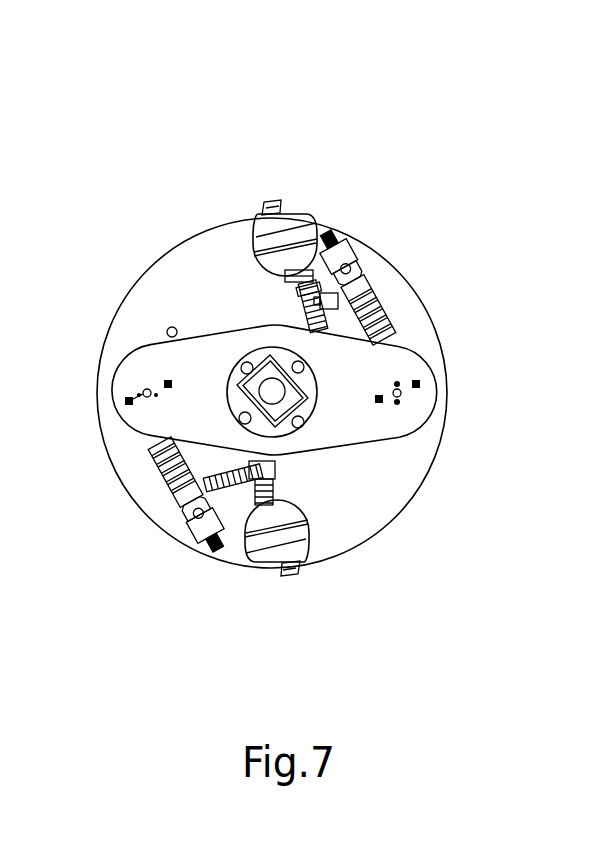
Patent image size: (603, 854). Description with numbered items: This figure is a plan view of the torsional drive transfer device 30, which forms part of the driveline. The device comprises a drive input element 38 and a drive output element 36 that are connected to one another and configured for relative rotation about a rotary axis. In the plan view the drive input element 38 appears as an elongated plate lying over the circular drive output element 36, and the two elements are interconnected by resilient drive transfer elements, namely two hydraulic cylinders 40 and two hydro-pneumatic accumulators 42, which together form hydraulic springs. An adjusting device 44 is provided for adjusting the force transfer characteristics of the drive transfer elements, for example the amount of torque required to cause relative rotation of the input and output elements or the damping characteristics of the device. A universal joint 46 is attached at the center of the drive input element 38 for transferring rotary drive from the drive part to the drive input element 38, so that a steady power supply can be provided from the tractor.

The torsional drive transfer device 30 is at (391, 180).
The drive output element 36 is at (358, 494).
The drive input element 38 is at (412, 407).
The hydraulic cylinder 40 is at (362, 292).
The hydro-pneumatic accumulator 42 is at (282, 257).
The adjusting device 44 is at (324, 292).
The universal joint 46 is at (252, 358).